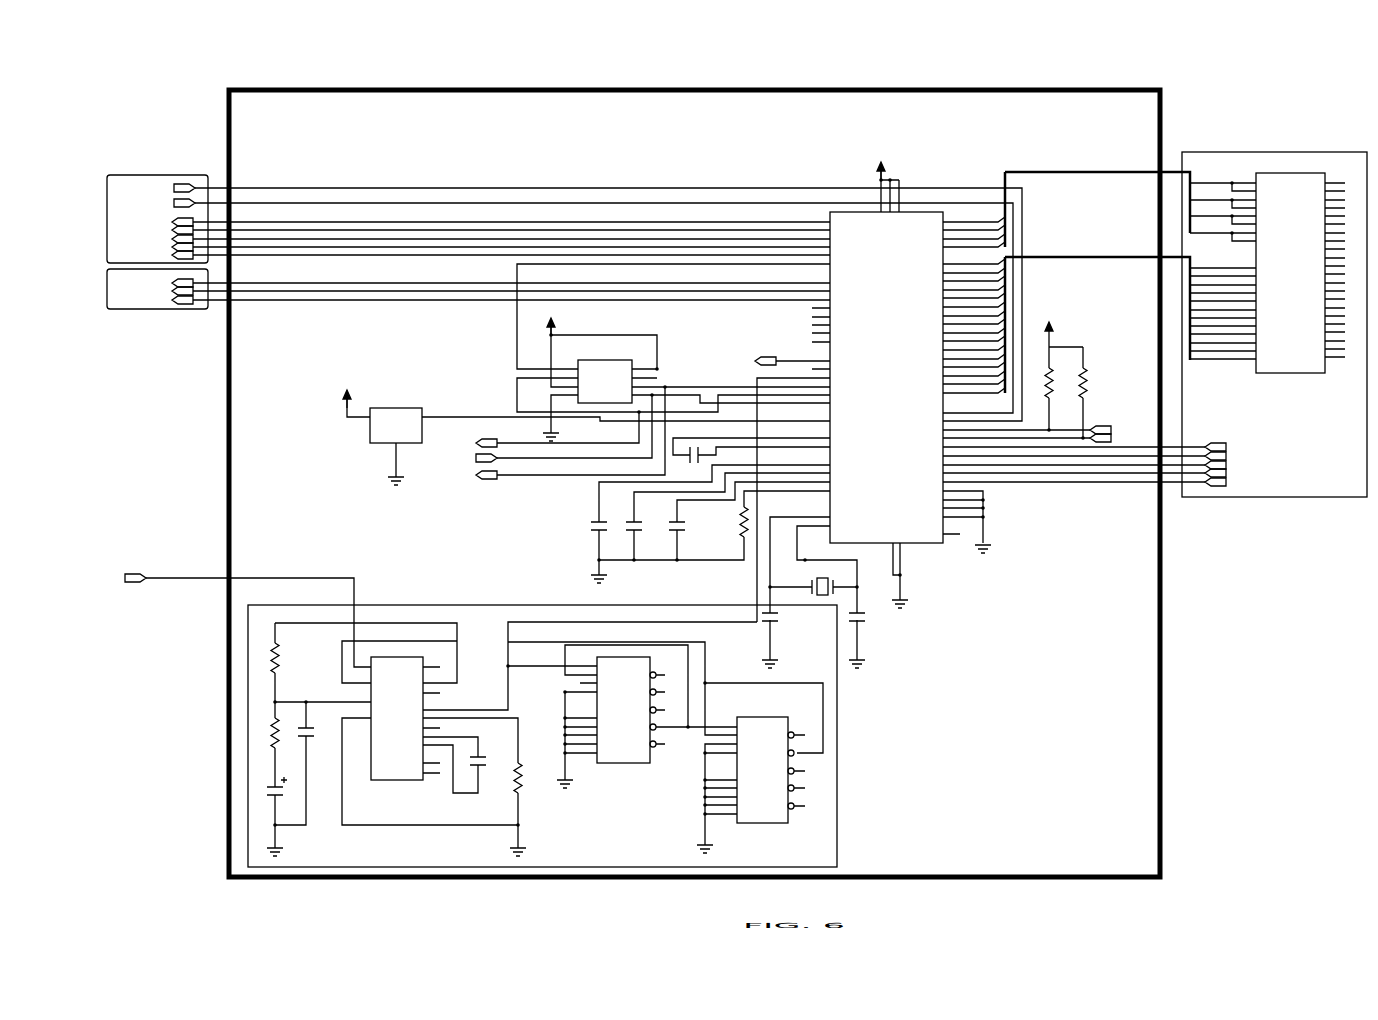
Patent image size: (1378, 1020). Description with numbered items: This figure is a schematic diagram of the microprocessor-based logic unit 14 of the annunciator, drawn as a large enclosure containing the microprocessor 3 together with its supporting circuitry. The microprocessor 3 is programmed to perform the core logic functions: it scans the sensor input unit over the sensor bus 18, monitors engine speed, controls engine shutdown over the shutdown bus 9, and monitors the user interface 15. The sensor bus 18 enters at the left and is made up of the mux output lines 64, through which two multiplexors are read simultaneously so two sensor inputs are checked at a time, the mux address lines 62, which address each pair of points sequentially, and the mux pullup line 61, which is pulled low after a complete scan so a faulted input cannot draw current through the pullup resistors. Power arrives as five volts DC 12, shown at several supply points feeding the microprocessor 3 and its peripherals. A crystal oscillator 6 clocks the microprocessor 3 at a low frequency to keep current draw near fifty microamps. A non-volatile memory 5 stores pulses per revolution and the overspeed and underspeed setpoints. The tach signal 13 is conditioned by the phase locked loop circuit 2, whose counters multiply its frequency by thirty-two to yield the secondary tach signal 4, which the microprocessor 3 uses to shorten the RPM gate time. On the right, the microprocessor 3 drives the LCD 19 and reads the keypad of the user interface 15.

The phase locked loop circuit 2 is at (246, 690).
The microprocessor 3 is at (863, 210).
The secondary tach signal 4 is at (568, 623).
The non-volatile memory 5 is at (632, 362).
The crystal oscillator 6 is at (830, 590).
The shutdown bus 9 is at (168, 310).
The 5 VDC 12 is at (887, 167).
The tach signal 13 is at (188, 577).
The microprocessor-based logic unit 14 is at (462, 88).
The user interface 15 is at (1318, 493).
The sensor bus 18 is at (175, 175).
The LCD 19 is at (1298, 178).
The mux pullup line 61 is at (442, 255).
The mux address lines 62 is at (378, 233).
The mux output lines 64 is at (447, 195).